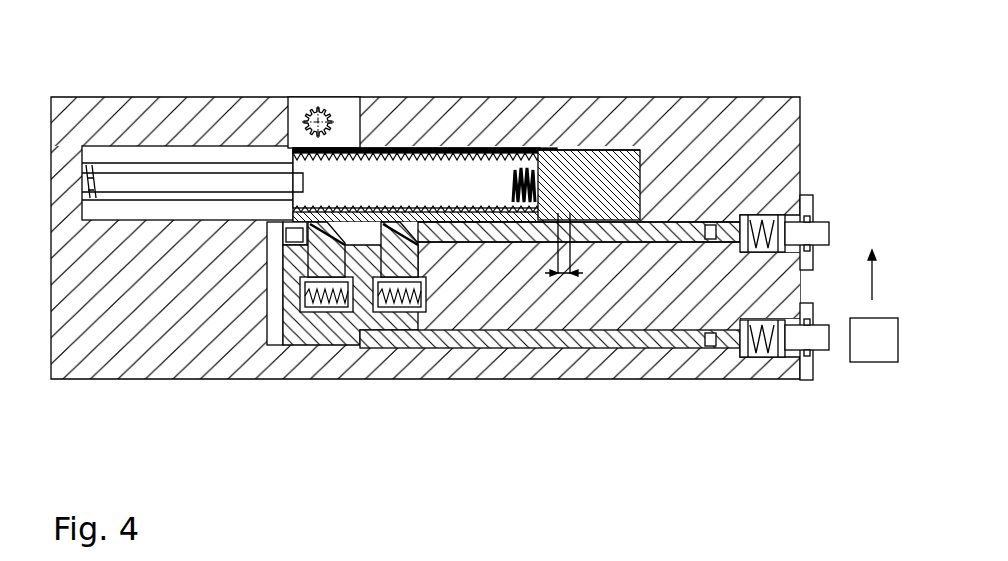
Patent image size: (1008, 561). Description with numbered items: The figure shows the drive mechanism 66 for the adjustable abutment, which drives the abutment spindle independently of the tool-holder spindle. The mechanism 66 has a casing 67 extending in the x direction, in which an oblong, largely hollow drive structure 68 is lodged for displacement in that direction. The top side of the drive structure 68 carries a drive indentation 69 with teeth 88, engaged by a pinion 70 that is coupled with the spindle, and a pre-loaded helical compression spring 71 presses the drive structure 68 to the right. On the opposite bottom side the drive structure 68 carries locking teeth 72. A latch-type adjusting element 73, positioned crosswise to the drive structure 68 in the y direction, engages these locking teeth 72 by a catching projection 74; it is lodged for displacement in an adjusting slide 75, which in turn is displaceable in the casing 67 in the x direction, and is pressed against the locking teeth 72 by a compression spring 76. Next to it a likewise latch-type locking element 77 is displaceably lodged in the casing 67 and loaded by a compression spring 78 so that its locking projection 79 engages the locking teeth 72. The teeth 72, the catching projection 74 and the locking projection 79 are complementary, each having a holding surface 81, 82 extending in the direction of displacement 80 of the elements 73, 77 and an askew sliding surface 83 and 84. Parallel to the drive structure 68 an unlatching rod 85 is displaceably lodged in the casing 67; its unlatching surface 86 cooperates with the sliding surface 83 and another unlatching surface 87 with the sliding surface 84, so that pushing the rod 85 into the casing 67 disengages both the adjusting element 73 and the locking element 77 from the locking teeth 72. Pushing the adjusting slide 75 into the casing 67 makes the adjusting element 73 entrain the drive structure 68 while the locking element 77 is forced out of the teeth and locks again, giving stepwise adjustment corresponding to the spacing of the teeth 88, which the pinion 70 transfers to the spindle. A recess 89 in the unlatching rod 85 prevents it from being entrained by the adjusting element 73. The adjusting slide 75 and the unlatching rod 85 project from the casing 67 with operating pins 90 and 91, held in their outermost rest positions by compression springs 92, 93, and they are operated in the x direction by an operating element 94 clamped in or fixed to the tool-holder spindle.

The drive mechanism 66 is at (550, 87).
The casing 67 is at (165, 100).
The drive structure 68 is at (630, 150).
The drive indentation 69 is at (555, 150).
The pinion 70 is at (318, 107).
The helical compression spring 71 is at (92, 172).
The locking teeth 72 is at (519, 223).
The adjusting element 73 is at (275, 292).
The catching projection 74 is at (285, 256).
The adjusting slide 75 is at (422, 268).
The compression spring 76 is at (300, 313).
The locking element 77 is at (375, 313).
The compression spring 78 is at (437, 340).
The locking projection 79 is at (513, 242).
The direction of displacement 80 is at (868, 263).
The holding surface 81 is at (283, 233).
The holding surface 82 is at (390, 210).
The sliding surface 83 is at (300, 148).
The sliding surface 84 is at (445, 205).
The unlatching rod 85 is at (690, 222).
The unlatching surface 86 is at (368, 210).
The unlatching surface 87 is at (514, 166).
The teeth 88 is at (565, 276).
The recess 89 is at (266, 237).
The operating pin 90 is at (807, 352).
The operating pin 91 is at (808, 195).
The compression spring 92 is at (749, 357).
The compression spring 93 is at (752, 215).
The operating element 94 is at (872, 362).